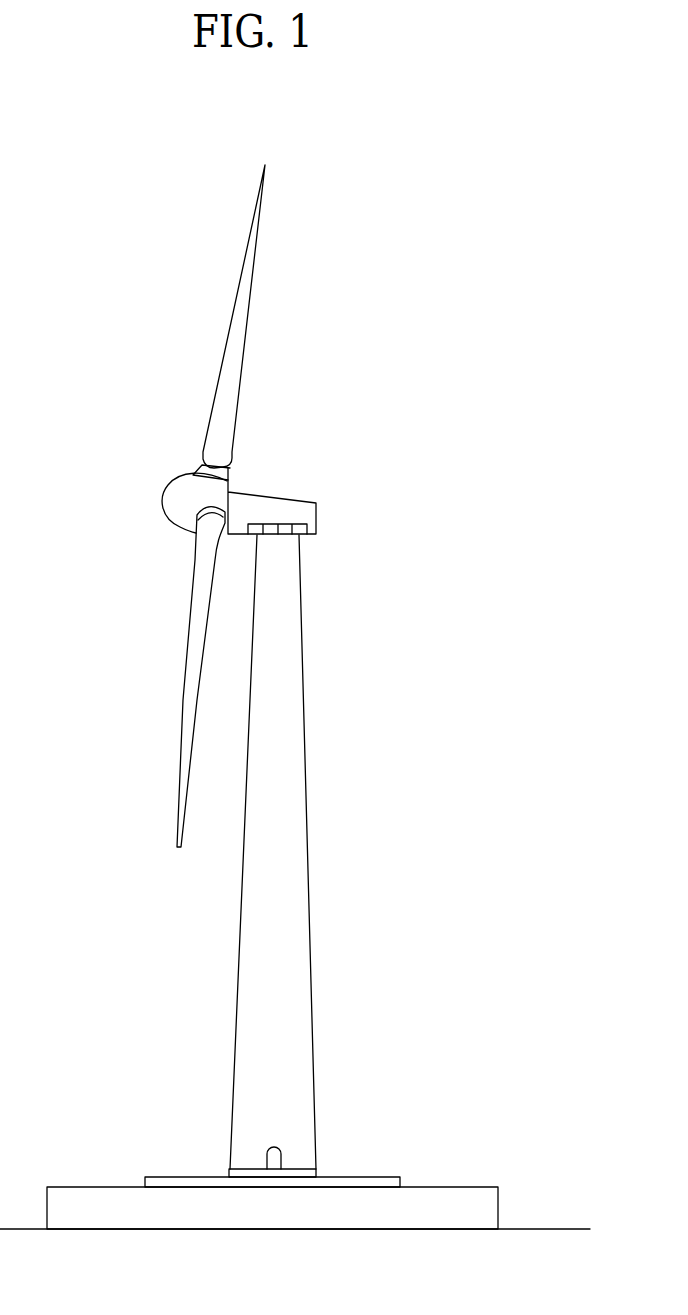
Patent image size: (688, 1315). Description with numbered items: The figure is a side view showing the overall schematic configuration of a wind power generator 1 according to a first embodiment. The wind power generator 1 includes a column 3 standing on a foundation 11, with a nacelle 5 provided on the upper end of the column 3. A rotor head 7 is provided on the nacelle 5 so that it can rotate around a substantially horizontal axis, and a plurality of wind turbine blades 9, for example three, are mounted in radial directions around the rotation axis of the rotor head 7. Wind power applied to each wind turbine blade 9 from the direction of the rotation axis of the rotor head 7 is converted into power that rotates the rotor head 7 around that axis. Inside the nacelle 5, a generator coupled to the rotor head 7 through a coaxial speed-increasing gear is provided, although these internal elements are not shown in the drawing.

The wind power generator 1 is at (425, 411).
The column 3 is at (306, 717).
The nacelle 5 is at (318, 517).
The rotor head 7 is at (163, 500).
The wind turbine blade 9 is at (255, 265).
The foundation 11 is at (457, 1187).